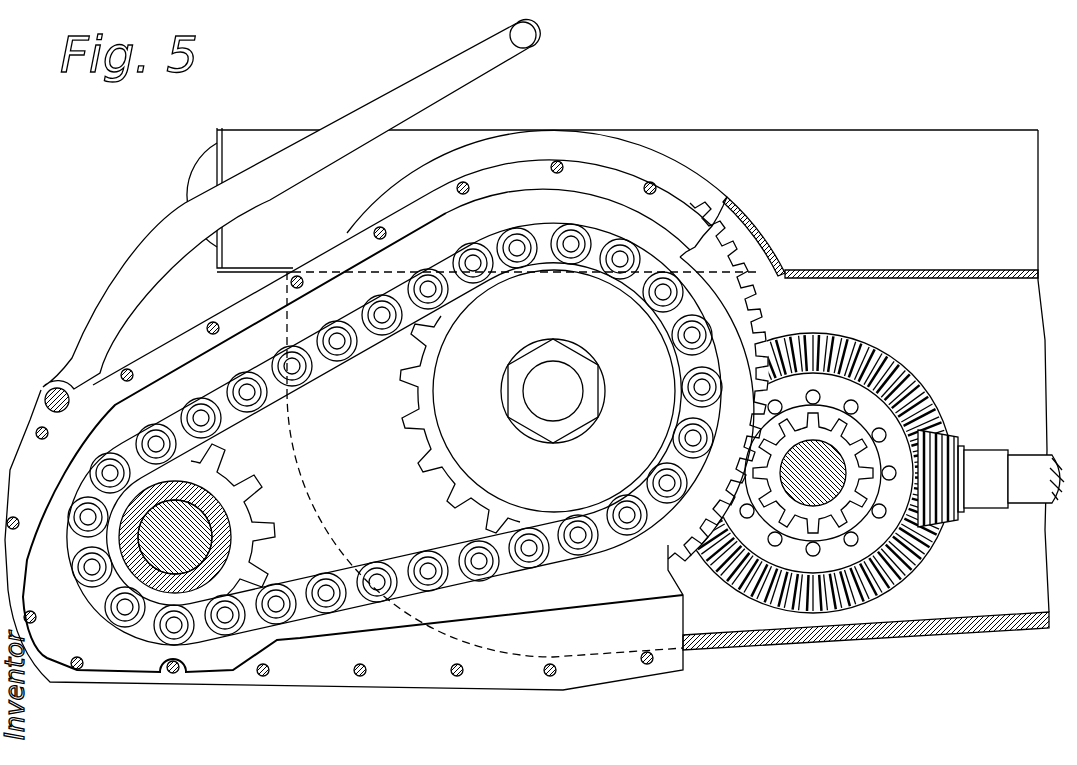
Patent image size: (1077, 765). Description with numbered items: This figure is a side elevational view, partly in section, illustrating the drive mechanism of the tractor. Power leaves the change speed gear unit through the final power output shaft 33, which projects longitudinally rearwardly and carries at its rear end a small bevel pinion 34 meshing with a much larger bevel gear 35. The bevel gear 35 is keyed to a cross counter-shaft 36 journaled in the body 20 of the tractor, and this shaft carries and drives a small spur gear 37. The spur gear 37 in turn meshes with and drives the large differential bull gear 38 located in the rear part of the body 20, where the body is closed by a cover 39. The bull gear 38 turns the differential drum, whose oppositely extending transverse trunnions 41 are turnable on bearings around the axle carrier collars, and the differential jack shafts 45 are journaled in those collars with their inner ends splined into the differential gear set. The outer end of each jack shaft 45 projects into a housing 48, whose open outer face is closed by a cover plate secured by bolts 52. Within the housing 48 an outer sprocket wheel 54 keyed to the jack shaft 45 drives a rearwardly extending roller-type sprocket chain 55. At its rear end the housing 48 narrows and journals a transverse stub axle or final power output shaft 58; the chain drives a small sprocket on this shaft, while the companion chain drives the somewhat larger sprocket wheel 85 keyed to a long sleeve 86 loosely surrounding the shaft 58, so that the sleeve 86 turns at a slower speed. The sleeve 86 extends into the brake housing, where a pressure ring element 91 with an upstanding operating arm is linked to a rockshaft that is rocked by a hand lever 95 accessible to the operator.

The body 20 is at (980, 630).
The final power output shaft of the change speed gear unit 33 is at (1037, 462).
The small bevel pinion 34 is at (960, 432).
The bevel gear 35 is at (905, 364).
The cross counter-shaft 36 is at (793, 488).
The small spur gear 37 is at (830, 478).
The differential bull gear 38 is at (762, 318).
The cover 39 is at (863, 134).
The trunnions 41 is at (845, 518).
The differential jack shafts 45 is at (538, 406).
The housing 48 is at (453, 686).
The bolts 52 is at (135, 374).
The outer sprocket wheel 54 is at (442, 432).
The sprocket chain 55 is at (340, 575).
The final power output shaft 58 is at (205, 527).
The sprocket wheel 85 is at (255, 537).
The sleeve 86 is at (200, 480).
The pressure ring element 91 is at (69, 398).
The hand lever 95 is at (468, 73).